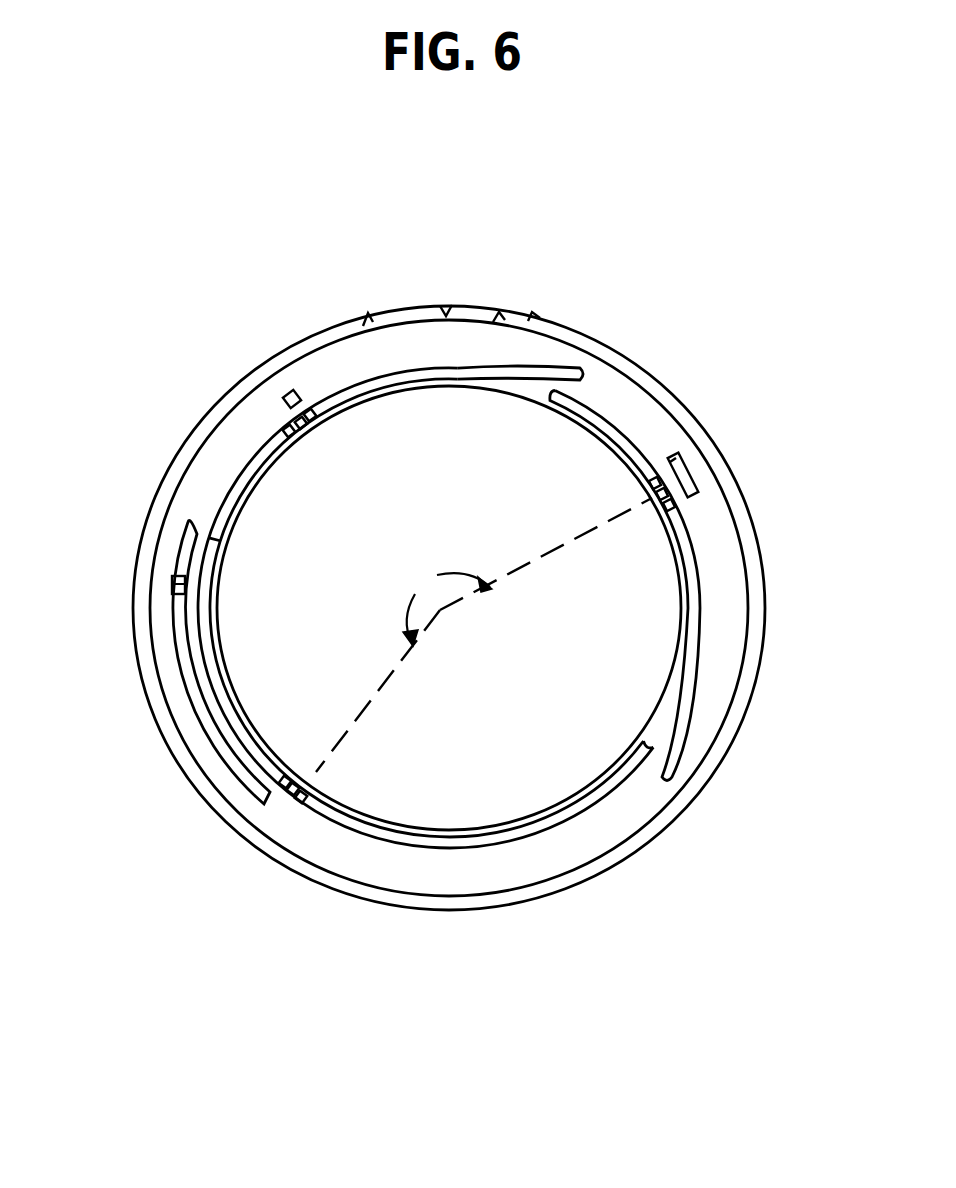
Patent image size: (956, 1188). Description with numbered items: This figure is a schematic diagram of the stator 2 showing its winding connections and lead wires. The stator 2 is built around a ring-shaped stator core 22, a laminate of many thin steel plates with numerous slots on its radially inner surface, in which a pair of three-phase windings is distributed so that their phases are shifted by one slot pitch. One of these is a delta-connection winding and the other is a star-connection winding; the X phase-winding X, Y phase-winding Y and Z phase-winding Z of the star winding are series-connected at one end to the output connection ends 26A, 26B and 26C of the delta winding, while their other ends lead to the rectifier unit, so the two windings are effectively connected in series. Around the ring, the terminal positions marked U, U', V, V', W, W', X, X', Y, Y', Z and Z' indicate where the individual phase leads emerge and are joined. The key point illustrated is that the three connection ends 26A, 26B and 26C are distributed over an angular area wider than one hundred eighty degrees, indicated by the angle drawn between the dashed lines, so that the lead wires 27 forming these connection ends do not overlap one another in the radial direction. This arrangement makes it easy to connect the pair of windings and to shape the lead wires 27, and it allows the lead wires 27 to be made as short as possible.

The stator 2 is at (667, 328).
The stator core 22 is at (533, 320).
The lead wires 27 is at (232, 492).
The output connection end 26A is at (700, 515).
The output connection end 26B is at (295, 812).
The output connection end 26C is at (317, 392).
The coil terminal U is at (601, 487).
The coil terminal U' is at (352, 441).
The coil terminal V is at (370, 778).
The coil terminal V' is at (635, 549).
The coil terminal W is at (290, 482).
The coil terminal W' is at (307, 727).
The X phase-winding X is at (745, 436).
The coil terminal X' is at (601, 522).
The Y phase-winding Y is at (121, 583).
The coil terminal Y' is at (337, 720).
The Z phase-winding Z is at (256, 348).
The coil terminal Z' is at (349, 469).